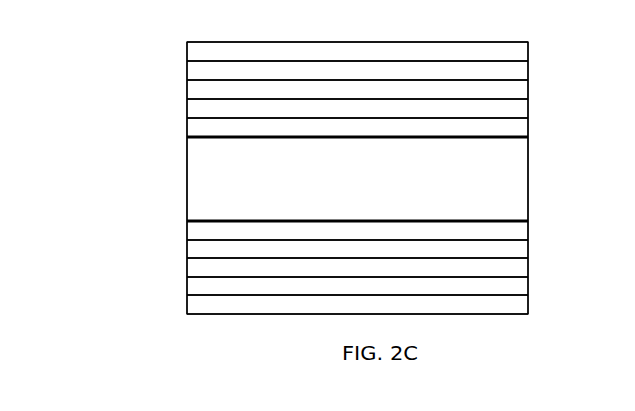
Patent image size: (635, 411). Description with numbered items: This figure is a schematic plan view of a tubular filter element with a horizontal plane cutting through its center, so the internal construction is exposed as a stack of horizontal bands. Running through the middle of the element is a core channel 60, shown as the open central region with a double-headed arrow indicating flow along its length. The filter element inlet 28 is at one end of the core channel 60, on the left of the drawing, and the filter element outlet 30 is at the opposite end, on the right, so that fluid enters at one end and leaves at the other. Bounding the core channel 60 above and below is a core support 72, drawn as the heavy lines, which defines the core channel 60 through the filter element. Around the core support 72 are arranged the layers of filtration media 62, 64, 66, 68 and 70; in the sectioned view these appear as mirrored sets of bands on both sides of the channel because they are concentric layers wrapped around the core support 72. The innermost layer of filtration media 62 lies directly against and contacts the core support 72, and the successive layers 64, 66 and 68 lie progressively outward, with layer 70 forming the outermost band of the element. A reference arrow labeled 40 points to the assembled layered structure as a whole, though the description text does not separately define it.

The multilayer film structure 40 is at (397, 27).
The core channel 60 is at (464, 178).
The innermost layer of filtration media 62 is at (528, 128).
The layer of filtration media 64 is at (528, 109).
The layer of filtration media 66 is at (528, 90).
The layer of filtration media 68 is at (528, 71).
The layer of filtration media 70 is at (528, 51).
The core support 72 is at (187, 138).
The filter element inlet 28 is at (162, 179).
The filter element outlet 30 is at (553, 179).